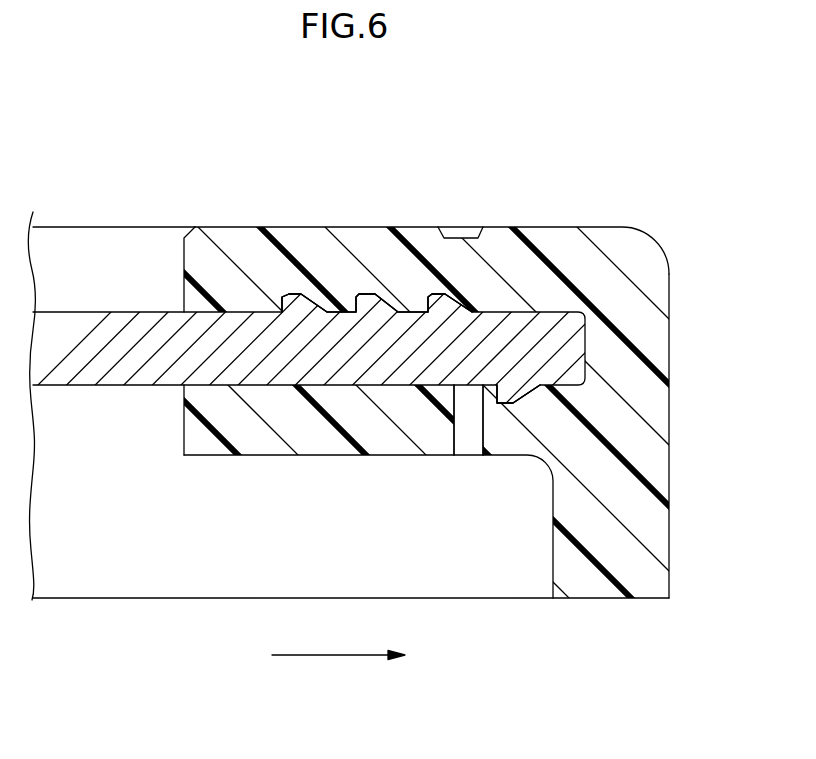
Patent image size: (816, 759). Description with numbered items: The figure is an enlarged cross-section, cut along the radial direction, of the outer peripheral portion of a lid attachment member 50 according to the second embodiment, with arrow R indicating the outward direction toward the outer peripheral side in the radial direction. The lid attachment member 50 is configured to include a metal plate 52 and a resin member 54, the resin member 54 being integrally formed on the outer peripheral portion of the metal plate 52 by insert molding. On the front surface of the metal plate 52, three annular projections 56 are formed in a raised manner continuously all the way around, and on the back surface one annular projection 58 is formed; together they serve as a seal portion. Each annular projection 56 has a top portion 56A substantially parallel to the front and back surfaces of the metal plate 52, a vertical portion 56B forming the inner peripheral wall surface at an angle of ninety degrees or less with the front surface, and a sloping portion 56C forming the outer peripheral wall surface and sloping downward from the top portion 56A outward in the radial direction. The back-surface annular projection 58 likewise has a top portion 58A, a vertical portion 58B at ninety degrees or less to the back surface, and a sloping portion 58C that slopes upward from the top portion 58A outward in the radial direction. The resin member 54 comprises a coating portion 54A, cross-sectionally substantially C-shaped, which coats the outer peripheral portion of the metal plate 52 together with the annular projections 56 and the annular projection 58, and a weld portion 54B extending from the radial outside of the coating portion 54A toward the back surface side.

The lid attachment member 50 is at (634, 172).
The metal plate 52 is at (122, 312).
The resin member 54 is at (555, 227).
The coating portion 54A is at (223, 227).
The weld portion 54B is at (669, 475).
The annular projections 56 is at (448, 135).
The top portion 56A is at (360, 294).
The vertical portion 56B is at (345, 294).
The sloping portion 56C is at (397, 294).
The annular projection 58 is at (545, 552).
The top portion 58A is at (501, 401).
The vertical portion 58B is at (484, 398).
The sloping portion 58C is at (534, 398).
The arrow R is at (330, 655).